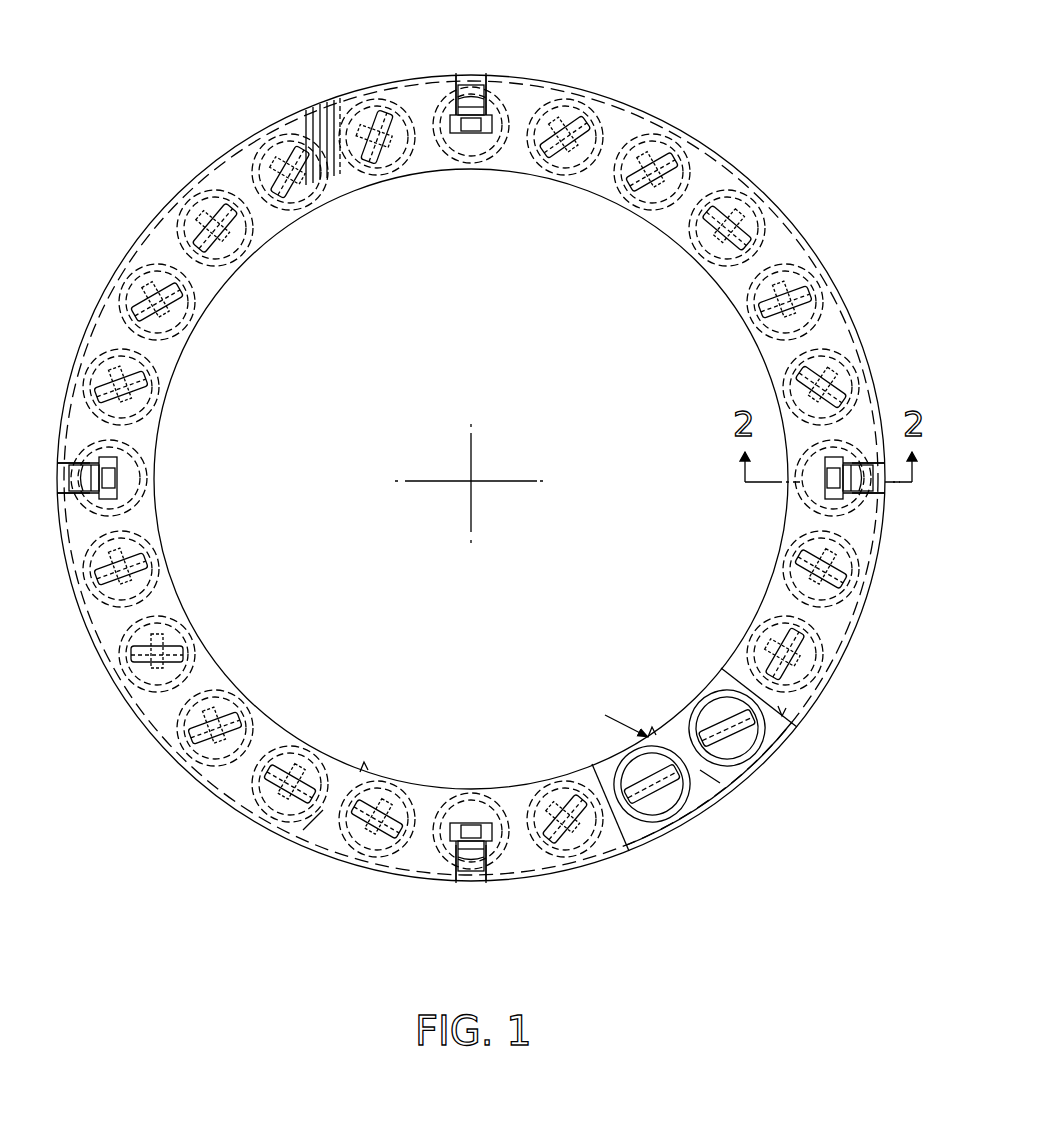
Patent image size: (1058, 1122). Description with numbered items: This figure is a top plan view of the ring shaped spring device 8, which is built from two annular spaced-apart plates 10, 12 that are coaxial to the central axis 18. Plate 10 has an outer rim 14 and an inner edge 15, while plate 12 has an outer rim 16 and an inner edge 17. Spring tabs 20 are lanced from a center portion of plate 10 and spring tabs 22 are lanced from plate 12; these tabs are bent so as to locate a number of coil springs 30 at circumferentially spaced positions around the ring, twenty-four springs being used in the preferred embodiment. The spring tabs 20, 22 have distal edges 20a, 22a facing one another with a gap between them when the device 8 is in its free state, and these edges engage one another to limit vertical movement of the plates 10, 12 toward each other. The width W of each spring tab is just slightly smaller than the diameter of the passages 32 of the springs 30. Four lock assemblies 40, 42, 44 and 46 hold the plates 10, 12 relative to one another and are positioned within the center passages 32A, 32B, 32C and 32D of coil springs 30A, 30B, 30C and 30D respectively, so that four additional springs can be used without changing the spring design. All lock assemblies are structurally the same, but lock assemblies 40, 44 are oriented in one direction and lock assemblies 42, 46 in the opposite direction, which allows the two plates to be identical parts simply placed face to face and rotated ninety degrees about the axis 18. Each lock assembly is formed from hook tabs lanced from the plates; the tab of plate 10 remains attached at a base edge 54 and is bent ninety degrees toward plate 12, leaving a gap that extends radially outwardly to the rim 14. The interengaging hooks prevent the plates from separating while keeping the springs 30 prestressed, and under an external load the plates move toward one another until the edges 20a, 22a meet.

The ring shaped spring device 8 is at (471, 498).
The plate 10 is at (210, 797).
The plate 12 is at (705, 788).
The outer rim 14 is at (362, 865).
The inner edge 15 is at (338, 767).
The outer rim 16 is at (655, 838).
The inner edge 17 is at (712, 685).
The axis 18 is at (472, 480).
The spring tabs 20 is at (660, 165).
The distal edge 20a is at (797, 672).
The spring tabs 22 is at (575, 125).
The distal edge 22a is at (727, 735).
The coil springs 30 is at (212, 193).
The coil spring 30A is at (866, 460).
The coil spring 30B is at (455, 98).
The coil spring 30C is at (135, 500).
The coil spring 30D is at (477, 870).
The passages 32 is at (392, 843).
The center passage 32A is at (813, 488).
The center passage 32B is at (470, 150).
The center passage 32C is at (158, 412).
The center passage 32D is at (468, 860).
The lock assembly 40 is at (847, 507).
The lock assembly 42 is at (495, 105).
The lock assembly 44 is at (123, 463).
The lock assembly 46 is at (497, 850).
The base edge 54 is at (476, 135).
The width W is at (360, 772).